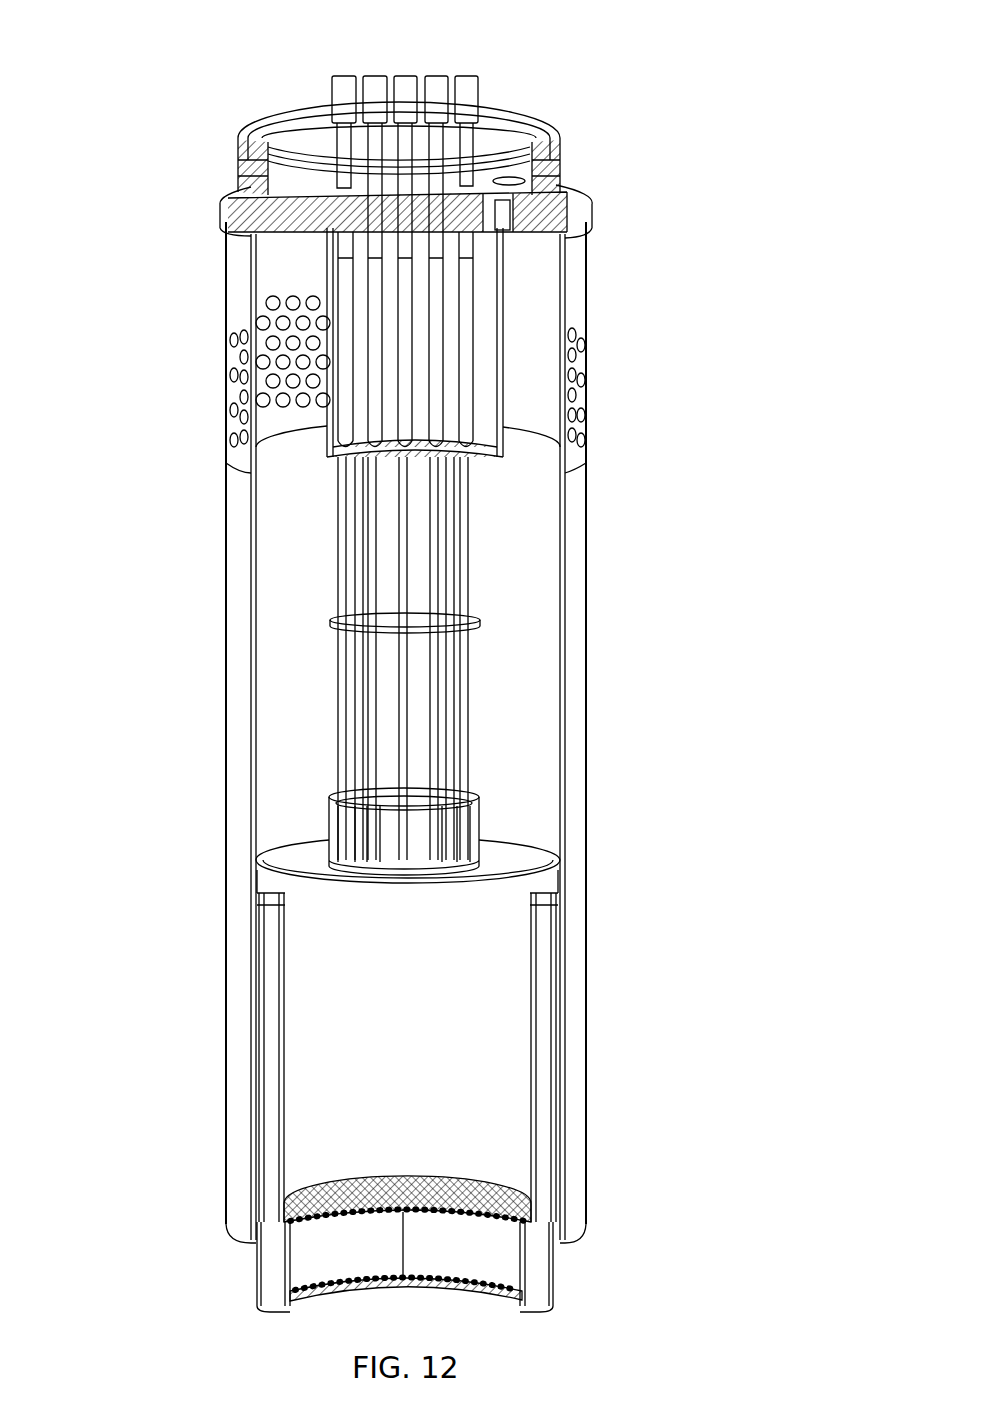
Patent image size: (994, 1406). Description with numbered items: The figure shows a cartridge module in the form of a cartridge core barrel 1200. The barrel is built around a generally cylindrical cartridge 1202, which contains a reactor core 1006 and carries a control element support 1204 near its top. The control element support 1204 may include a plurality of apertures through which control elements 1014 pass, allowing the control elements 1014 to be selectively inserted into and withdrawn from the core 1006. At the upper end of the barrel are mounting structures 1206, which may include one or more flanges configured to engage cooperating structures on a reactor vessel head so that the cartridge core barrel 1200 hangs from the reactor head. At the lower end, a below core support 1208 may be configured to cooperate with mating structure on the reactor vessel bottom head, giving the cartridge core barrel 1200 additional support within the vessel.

The cartridge core barrel 1200 is at (537, 72).
The control elements 1014 is at (345, 157).
The mounting structures 1206 is at (567, 143).
The control element support 1204 is at (287, 224).
The cartridge 1202 is at (580, 498).
The reactor core 1006 is at (428, 999).
The below core support 1208 is at (551, 1270).